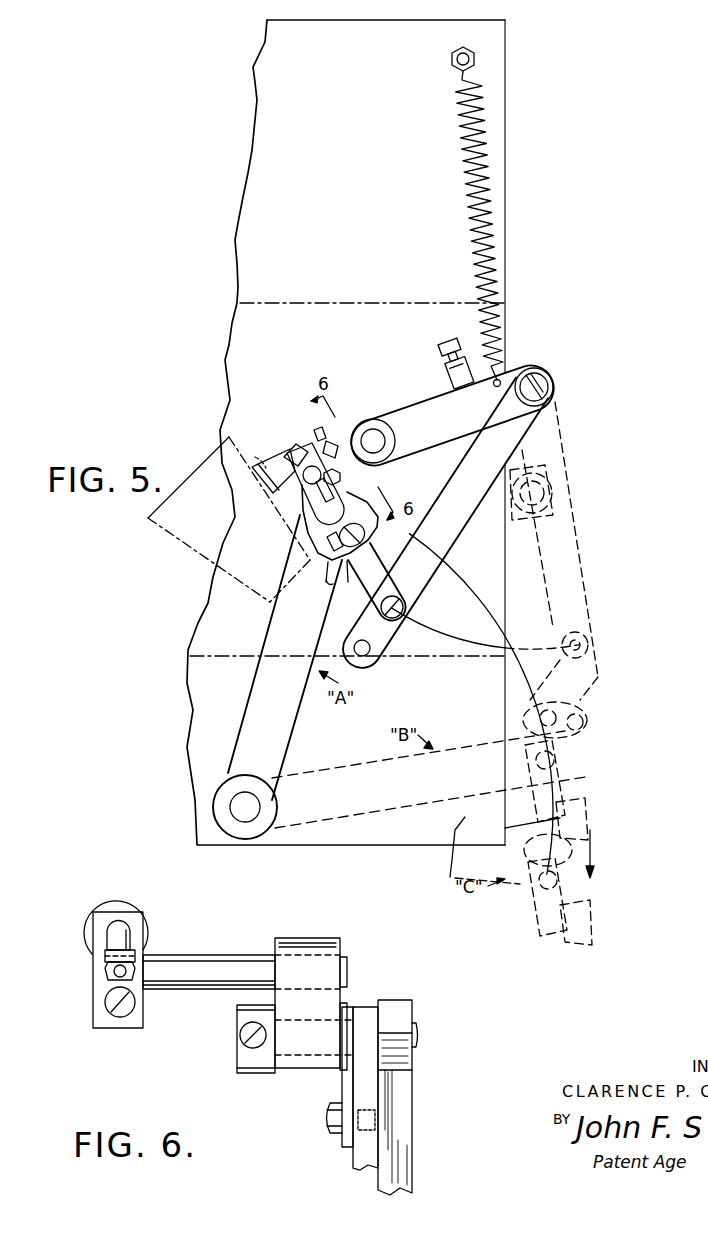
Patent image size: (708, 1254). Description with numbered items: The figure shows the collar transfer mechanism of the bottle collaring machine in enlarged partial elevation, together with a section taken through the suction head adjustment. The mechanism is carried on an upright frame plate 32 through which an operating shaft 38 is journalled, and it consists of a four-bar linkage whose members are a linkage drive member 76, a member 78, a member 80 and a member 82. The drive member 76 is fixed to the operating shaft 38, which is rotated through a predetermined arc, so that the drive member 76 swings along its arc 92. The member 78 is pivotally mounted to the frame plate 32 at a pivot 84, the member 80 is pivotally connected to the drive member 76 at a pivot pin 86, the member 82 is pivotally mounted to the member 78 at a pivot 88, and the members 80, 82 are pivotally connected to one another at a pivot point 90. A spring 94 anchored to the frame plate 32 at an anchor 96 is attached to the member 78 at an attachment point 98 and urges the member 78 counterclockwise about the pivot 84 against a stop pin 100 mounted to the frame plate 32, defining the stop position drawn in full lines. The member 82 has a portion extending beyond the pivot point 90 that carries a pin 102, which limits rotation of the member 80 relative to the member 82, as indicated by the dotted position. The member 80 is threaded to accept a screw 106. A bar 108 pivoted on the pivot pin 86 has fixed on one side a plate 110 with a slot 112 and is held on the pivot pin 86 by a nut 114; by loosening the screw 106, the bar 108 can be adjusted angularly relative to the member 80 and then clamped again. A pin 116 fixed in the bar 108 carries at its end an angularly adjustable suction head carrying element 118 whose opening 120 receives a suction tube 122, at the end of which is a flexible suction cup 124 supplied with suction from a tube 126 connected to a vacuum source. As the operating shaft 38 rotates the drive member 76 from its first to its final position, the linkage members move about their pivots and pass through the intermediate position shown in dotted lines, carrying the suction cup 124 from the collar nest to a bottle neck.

In FIG. 5, the upright frame plate 32 is at (344, 216).
In FIG. 5, the operating shaft 38 is at (256, 817).
In FIG. 5, the linkage drive member 76 is at (276, 729).
In FIG. 6, the linkage drive member 76 is at (410, 1098).
In FIG. 5, the linkage member 78 is at (448, 432).
In FIG. 5, the linkage member 80 is at (388, 594).
In FIG. 6, the linkage member 80 is at (379, 1091).
In FIG. 5, the linkage member 82 is at (478, 503).
In FIG. 5, the pivot 84 is at (386, 440).
In FIG. 5, the pivot pin 86 is at (341, 495).
In FIG. 6, the pivot pin 86 is at (420, 1032).
In FIG. 5, the pivot 88 is at (551, 385).
In FIG. 5, the pivot point 90 is at (418, 588).
In FIG. 5, the arc 92 is at (480, 607).
In FIG. 5, the spring 94 is at (460, 133).
In FIG. 5, the spring anchor 96 is at (452, 59).
In FIG. 5, the spring attachment point 98 is at (494, 387).
In FIG. 5, the stop pin 100 is at (446, 359).
In FIG. 5, the pin 102 is at (371, 649).
In FIG. 5, the screw 106 is at (348, 570).
In FIG. 6, the screw 106 is at (327, 1127).
In FIG. 5, the bar 108 is at (346, 500).
In FIG. 6, the bar 108 is at (326, 1015).
In FIG. 5, the plate 110 is at (328, 566).
In FIG. 6, the plate 110 is at (348, 1094).
In FIG. 5, the slot 112 is at (364, 536).
In FIG. 6, the nut 114 is at (240, 1011).
In FIG. 5, the pin 116 is at (330, 470).
In FIG. 6, the pin 116 is at (245, 972).
In FIG. 5, the suction head carrying element 118 is at (298, 487).
In FIG. 6, the suction head carrying element 118 is at (100, 1017).
In FIG. 5, the opening 120 is at (300, 449).
In FIG. 6, the opening 120 is at (131, 923).
In FIG. 5, the suction tube 122 is at (318, 434).
In FIG. 6, the suction tube 122 is at (131, 942).
In FIG. 5, the flexible suction cup 124 is at (251, 464).
In FIG. 6, the flexible suction cup 124 is at (123, 903).
In FIG. 5, the tube 126 is at (338, 439).
In FIG. 6, the tube 126 is at (104, 963).